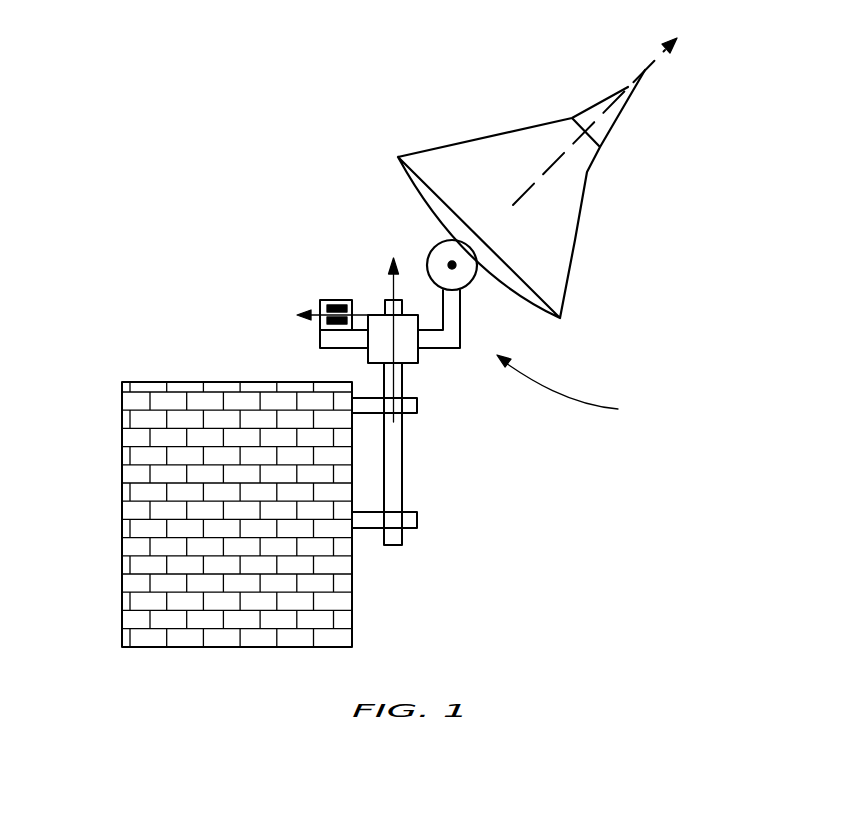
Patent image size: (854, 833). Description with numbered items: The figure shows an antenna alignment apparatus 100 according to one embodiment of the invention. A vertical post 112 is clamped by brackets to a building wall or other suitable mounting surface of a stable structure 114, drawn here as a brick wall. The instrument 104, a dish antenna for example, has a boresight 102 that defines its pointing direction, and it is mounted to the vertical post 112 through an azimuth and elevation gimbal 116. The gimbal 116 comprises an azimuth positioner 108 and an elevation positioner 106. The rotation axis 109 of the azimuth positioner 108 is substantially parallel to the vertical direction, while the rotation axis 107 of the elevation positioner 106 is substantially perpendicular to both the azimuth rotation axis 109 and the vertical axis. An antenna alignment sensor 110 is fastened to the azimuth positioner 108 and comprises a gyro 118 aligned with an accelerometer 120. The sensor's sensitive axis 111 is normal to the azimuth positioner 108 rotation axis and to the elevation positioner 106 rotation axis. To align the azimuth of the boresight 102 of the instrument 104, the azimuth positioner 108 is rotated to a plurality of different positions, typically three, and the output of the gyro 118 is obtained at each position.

The optical communication system 100 is at (295, 162).
The boresight 102 is at (640, 78).
The instrument 104 is at (578, 249).
The elevation positioner 106 is at (476, 276).
The rotation axis of the elevation positioner 107 is at (445, 262).
The azimuth positioner 108 is at (418, 358).
The rotation axis of the azimuth positioner 109 is at (390, 275).
The antenna alignment sensor 110 is at (317, 307).
The sensitive axis 111 is at (300, 315).
The vertical post 112 is at (403, 475).
The stable structure 114 is at (183, 382).
The azimuth and elevation gimbal 116 is at (579, 388).
The gyro 118 is at (337, 303).
The accelerometer 120 is at (318, 327).